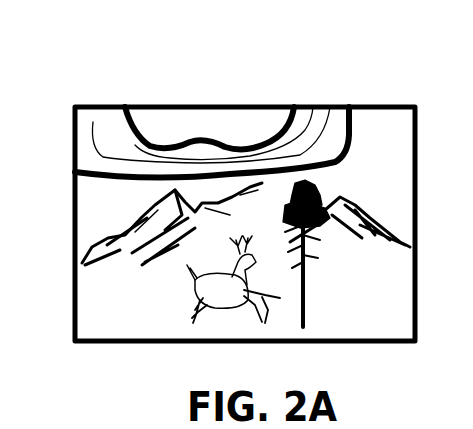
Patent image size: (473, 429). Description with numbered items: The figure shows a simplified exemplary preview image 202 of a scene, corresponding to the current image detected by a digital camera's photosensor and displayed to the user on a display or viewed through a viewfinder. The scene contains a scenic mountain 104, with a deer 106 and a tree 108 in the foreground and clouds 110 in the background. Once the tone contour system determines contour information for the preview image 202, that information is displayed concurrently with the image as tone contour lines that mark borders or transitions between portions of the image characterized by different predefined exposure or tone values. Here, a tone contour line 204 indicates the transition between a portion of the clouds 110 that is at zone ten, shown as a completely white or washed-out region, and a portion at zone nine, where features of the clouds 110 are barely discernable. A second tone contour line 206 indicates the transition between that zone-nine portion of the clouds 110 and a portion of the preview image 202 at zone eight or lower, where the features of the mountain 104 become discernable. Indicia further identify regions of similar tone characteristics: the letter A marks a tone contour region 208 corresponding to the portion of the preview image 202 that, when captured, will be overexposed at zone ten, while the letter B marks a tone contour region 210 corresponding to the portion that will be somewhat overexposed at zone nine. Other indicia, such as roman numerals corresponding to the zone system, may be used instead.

The scenic mountain 104 is at (339, 195).
The deer 106 is at (185, 275).
The tree 108 is at (307, 278).
The clouds 110 is at (108, 133).
The preview image 202 is at (417, 255).
The tone contour line 204 is at (336, 107).
The tone contour line 206 is at (352, 142).
The tone contour region 208 is at (233, 125).
The tone contour region 210 is at (100, 157).